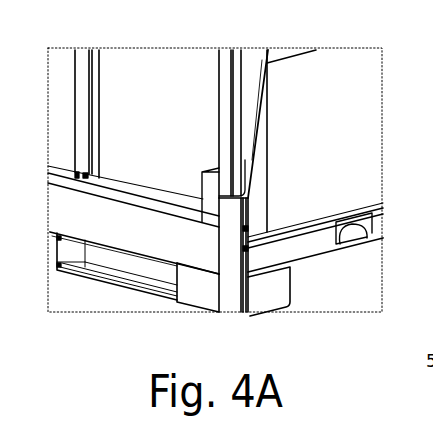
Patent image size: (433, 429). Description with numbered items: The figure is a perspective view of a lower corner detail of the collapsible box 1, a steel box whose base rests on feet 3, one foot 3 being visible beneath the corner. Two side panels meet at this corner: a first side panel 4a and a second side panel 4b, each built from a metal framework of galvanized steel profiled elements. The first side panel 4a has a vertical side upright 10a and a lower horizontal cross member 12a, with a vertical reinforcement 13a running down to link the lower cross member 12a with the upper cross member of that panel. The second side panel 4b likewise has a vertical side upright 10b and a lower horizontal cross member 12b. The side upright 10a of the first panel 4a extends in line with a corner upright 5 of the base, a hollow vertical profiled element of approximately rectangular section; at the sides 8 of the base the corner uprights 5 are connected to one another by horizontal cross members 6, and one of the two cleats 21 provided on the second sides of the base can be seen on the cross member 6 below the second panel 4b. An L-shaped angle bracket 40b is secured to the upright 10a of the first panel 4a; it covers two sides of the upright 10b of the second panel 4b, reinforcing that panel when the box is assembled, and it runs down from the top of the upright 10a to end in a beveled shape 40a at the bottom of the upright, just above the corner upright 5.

The collapsible box 1 is at (427, 241).
The foot 3 is at (283, 296).
The first side panel 4a is at (158, 100).
The second side panel 4b is at (334, 125).
The corner upright 5 is at (228, 303).
The horizontal cross member 6 is at (112, 223).
The side of the base 8 is at (167, 250).
The vertical side upright 10a is at (222, 82).
The vertical side upright 10b is at (258, 157).
The lower horizontal cross member 12a is at (128, 193).
The lower horizontal cross member 12b is at (285, 237).
The vertical reinforcement 13a is at (98, 66).
The cleat 21 is at (357, 238).
The beveled shape 40a is at (203, 184).
The angle bracket 40b is at (258, 90).